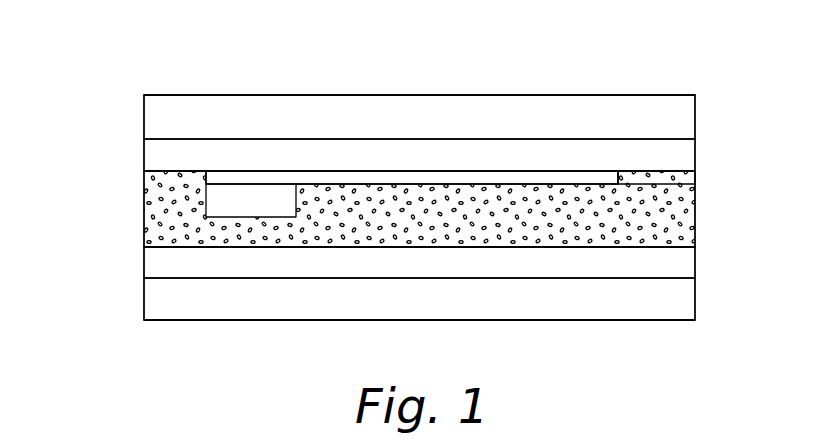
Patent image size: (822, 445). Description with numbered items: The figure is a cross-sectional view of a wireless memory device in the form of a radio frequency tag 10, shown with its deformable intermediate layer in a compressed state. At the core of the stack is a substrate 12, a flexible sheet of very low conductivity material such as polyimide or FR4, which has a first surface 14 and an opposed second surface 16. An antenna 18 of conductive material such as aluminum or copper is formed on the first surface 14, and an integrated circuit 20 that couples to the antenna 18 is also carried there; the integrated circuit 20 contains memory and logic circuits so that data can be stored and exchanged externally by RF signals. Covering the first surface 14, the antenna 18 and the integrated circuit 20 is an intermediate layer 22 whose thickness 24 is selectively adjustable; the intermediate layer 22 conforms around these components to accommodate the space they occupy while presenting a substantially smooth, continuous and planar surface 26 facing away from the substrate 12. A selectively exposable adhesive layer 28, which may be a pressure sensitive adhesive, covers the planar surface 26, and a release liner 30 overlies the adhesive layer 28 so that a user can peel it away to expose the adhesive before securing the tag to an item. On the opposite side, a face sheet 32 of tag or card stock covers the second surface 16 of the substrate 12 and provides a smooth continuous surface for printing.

The RF tag 10 is at (121, 114).
The substrate 12 is at (697, 152).
The first surface 14 is at (697, 181).
The second surface 16 is at (683, 139).
The antenna 18 is at (660, 171).
The integrated circuit 20 is at (206, 200).
The intermediate layer 22 is at (696, 231).
The thickness 24 is at (133, 172).
The planar surface 26 is at (678, 247).
The adhesive layer 28 is at (696, 265).
The release liner 30 is at (696, 310).
The face sheet 32 is at (696, 109).